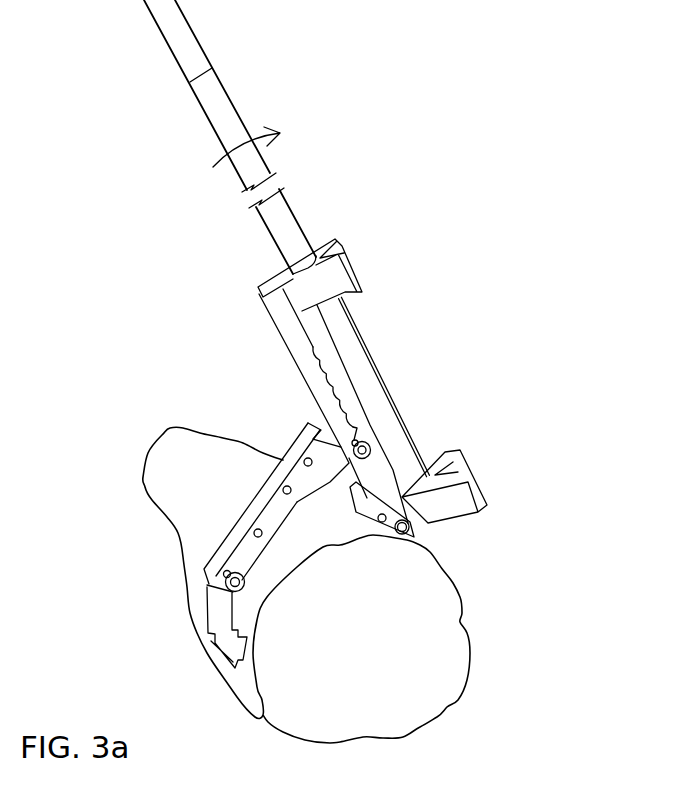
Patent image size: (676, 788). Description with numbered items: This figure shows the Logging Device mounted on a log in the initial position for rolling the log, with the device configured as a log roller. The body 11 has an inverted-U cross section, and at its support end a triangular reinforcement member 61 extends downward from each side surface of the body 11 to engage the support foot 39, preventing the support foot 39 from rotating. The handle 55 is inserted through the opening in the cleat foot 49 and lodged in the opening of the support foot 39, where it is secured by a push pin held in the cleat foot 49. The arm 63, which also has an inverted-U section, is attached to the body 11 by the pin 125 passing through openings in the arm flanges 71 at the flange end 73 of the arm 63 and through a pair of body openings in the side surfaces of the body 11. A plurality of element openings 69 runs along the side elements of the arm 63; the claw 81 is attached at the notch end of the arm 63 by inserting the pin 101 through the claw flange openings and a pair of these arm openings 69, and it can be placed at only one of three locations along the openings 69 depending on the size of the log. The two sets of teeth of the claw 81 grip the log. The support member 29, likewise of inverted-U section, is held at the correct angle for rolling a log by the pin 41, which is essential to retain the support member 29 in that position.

The body 11 is at (296, 362).
The support member 29 is at (392, 538).
The support foot 39 is at (482, 490).
The pin 41 is at (368, 532).
The cleat foot 49 is at (365, 289).
The handle 55 is at (290, 210).
The reinforcement member 61 is at (410, 470).
The arm 63 is at (286, 457).
The element openings 69 is at (254, 531).
The arm flanges 71 is at (357, 400).
The flange end 73 is at (317, 423).
The claw 81 is at (208, 637).
The pin 101 is at (208, 587).
The pin 125 is at (369, 445).